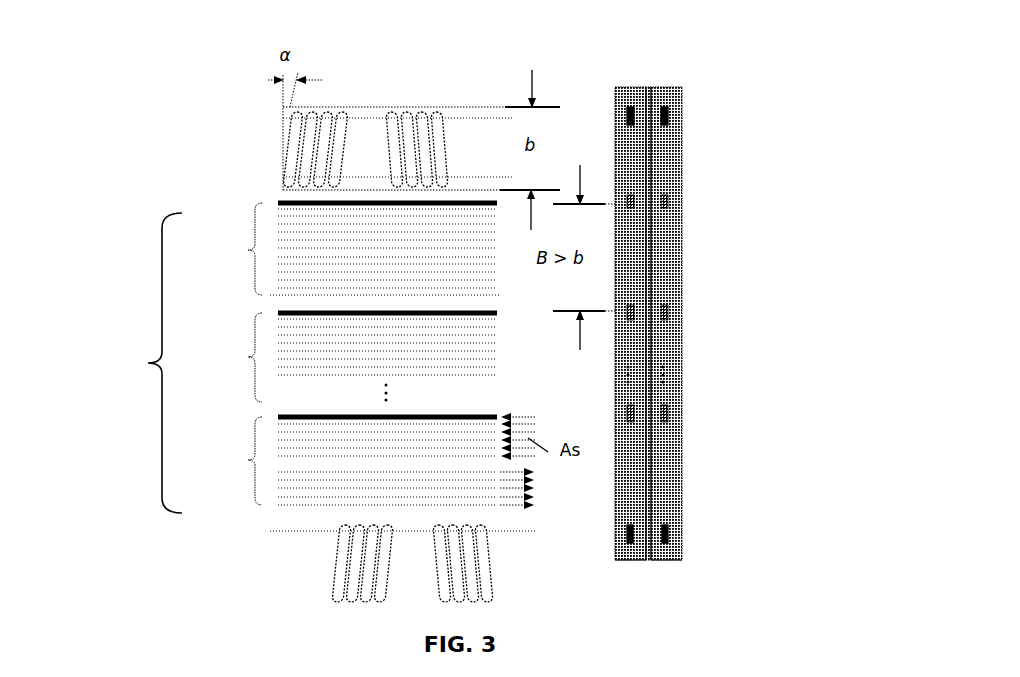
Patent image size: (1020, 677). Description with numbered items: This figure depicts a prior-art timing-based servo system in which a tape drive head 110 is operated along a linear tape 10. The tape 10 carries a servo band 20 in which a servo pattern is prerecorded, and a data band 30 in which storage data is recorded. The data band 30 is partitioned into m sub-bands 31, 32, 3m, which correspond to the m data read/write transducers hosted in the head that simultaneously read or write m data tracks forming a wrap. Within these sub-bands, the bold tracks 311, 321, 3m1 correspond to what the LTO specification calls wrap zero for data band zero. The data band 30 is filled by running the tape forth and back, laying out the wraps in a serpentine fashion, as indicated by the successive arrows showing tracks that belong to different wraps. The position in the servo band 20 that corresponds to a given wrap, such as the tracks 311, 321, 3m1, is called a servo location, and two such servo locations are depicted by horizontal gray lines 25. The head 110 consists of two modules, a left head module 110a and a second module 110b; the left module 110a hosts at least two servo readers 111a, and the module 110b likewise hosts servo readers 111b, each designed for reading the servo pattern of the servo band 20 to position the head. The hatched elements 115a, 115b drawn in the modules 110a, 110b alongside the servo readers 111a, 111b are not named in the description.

The linear tape 10 is at (157, 515).
The servo band 20 is at (270, 135).
The horizontal gray lines 25 is at (450, 177).
The data band 30 is at (327, 353).
The sub-band 31 is at (331, 235).
The track 311 is at (278, 202).
The sub-band 32 is at (342, 345).
The track 321 is at (278, 312).
The sub-band 3m is at (342, 450).
The track 3m1 is at (278, 417).
The tape drive head 110 is at (800, 340).
The left head module 110a is at (638, 560).
The head module 110b is at (672, 553).
The servo reader 111a is at (633, 128).
The servo reader 111b is at (672, 118).
The first opening 115a is at (628, 207).
The second opening 115b is at (670, 203).